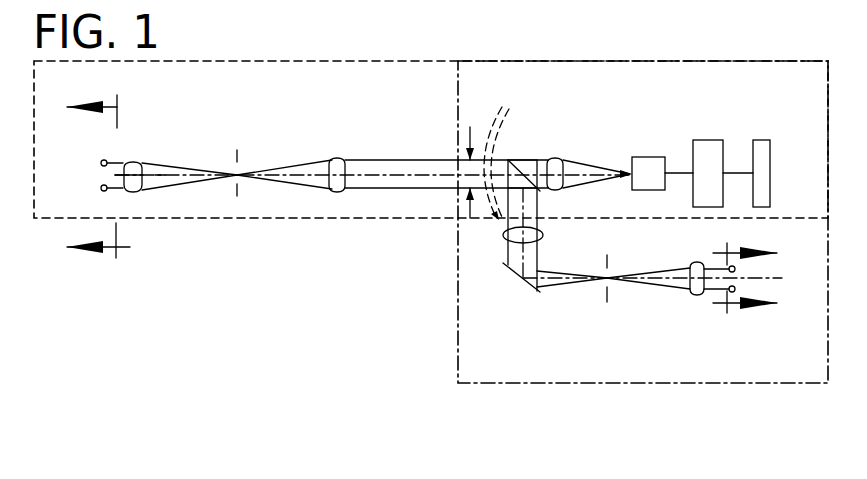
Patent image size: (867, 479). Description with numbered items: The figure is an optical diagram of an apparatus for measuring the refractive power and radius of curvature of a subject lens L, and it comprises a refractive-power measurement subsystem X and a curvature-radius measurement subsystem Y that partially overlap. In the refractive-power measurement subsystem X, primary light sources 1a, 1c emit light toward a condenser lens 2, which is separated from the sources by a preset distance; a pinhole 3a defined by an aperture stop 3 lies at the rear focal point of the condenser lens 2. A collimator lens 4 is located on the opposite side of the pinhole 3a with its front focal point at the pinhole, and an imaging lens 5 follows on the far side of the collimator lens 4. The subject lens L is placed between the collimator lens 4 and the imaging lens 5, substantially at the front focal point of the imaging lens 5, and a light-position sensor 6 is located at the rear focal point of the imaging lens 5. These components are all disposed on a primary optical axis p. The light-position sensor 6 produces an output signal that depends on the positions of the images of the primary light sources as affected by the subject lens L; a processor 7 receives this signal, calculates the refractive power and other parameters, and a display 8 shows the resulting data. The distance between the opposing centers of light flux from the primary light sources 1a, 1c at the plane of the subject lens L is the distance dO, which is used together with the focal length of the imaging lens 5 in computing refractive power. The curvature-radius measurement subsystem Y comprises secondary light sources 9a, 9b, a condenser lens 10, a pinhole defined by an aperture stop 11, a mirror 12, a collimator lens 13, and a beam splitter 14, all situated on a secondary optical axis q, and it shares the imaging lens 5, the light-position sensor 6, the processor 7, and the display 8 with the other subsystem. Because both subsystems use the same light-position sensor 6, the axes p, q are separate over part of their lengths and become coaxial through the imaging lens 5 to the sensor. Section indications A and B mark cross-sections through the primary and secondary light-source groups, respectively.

The primary light source 1a is at (101, 163).
The primary light source 1c is at (101, 189).
The condenser lens 2 is at (137, 160).
The aperture stop 3 is at (240, 158).
The pinhole 3a is at (240, 177).
The collimator lens 4 is at (336, 158).
The imaging lens 5 is at (557, 158).
The light-position sensor 6 is at (645, 157).
The processor 7 is at (705, 140).
The display 8 is at (762, 140).
The secondary light source 9a is at (735, 268).
The secondary light source 9b is at (735, 290).
The condenser lens 10 is at (697, 262).
The aperture stop 11 is at (607, 294).
The mirror 12 is at (539, 292).
The collimator lens 13 is at (543, 236).
The beam splitter 14 is at (508, 160).
The refractive-power measurement subsystem X is at (352, 60).
The curvature-radius measurement subsystem Y is at (676, 385).
The subject lens L is at (498, 147).
The section A- A is at (104, 179).
The section B- B is at (738, 283).
The primary optical axis p is at (160, 176).
The secondary optical axis q is at (658, 285).
The distance between opposing centers of light flux dO is at (470, 127).